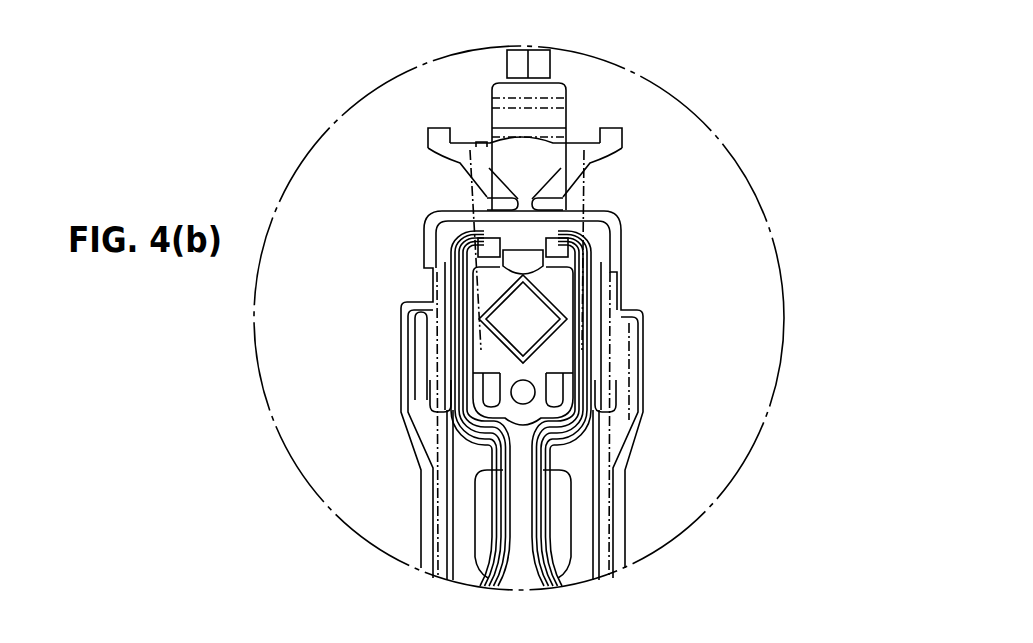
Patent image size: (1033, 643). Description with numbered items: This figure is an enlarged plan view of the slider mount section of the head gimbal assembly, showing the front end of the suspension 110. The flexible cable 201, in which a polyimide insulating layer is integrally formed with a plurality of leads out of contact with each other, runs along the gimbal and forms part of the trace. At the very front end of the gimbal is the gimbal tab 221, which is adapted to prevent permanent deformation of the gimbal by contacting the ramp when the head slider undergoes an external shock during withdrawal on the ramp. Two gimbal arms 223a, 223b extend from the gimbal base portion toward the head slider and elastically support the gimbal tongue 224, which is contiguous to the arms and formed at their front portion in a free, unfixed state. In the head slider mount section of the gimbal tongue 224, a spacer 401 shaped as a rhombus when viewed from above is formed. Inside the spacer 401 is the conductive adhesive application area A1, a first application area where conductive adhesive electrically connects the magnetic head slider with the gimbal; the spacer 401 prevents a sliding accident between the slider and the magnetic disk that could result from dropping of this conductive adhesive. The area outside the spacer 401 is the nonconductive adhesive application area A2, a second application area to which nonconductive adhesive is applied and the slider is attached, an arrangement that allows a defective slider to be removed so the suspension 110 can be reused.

The suspension 110 is at (626, 98).
The gimbal tab 221 is at (623, 138).
The gimbal arm 223a is at (622, 230).
The gimbal arm 223b is at (438, 214).
The flexible cable 201 is at (582, 473).
The gimbal tongue 224 is at (558, 390).
The spacer 401 is at (508, 345).
The conductive adhesive application area A1 is at (530, 312).
The nonconductive adhesive application area A2 is at (547, 358).